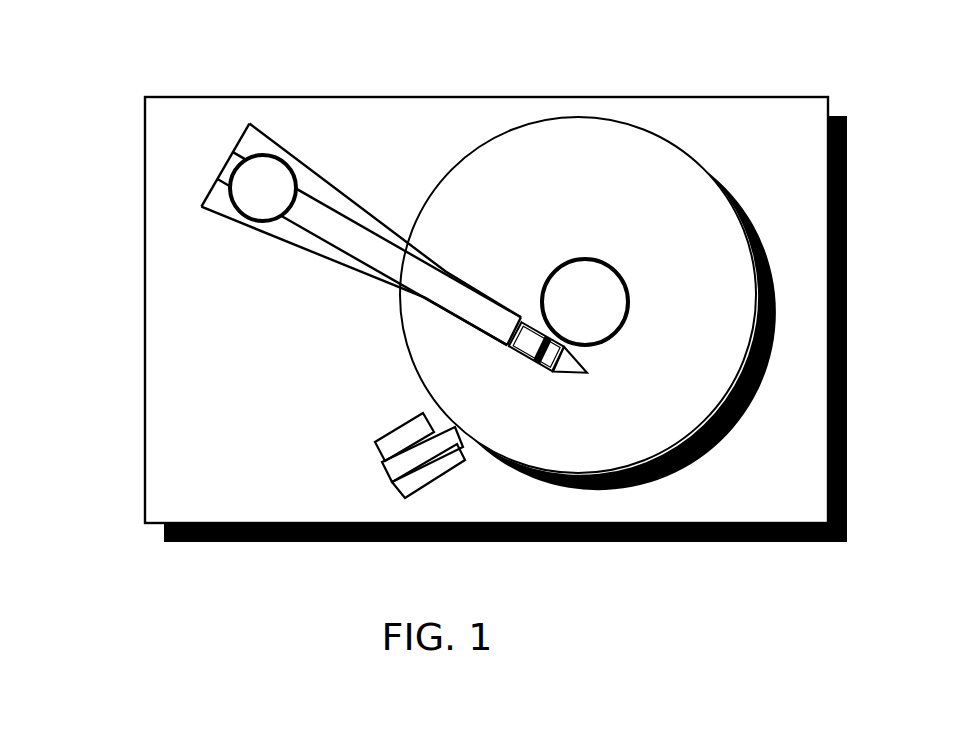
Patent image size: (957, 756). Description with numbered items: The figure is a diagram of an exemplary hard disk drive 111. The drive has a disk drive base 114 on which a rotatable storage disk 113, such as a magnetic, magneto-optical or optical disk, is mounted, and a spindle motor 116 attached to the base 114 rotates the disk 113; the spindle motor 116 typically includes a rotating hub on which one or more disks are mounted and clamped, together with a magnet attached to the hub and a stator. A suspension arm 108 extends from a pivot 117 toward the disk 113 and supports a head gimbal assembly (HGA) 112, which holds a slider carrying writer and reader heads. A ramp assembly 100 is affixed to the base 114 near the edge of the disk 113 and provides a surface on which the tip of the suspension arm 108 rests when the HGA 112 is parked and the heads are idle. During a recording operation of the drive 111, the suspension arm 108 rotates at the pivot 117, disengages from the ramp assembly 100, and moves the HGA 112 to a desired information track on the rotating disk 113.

The hard disk drive 111 is at (460, 78).
The disk drive base 114 is at (210, 488).
The rotatable storage disk 113 is at (508, 183).
The spindle motor 116 is at (597, 275).
The suspension arm 108 is at (388, 265).
The pivot 117 is at (257, 190).
The head gimbal assembly (HGA) 112 is at (541, 372).
The ramp assembly 100 is at (380, 467).